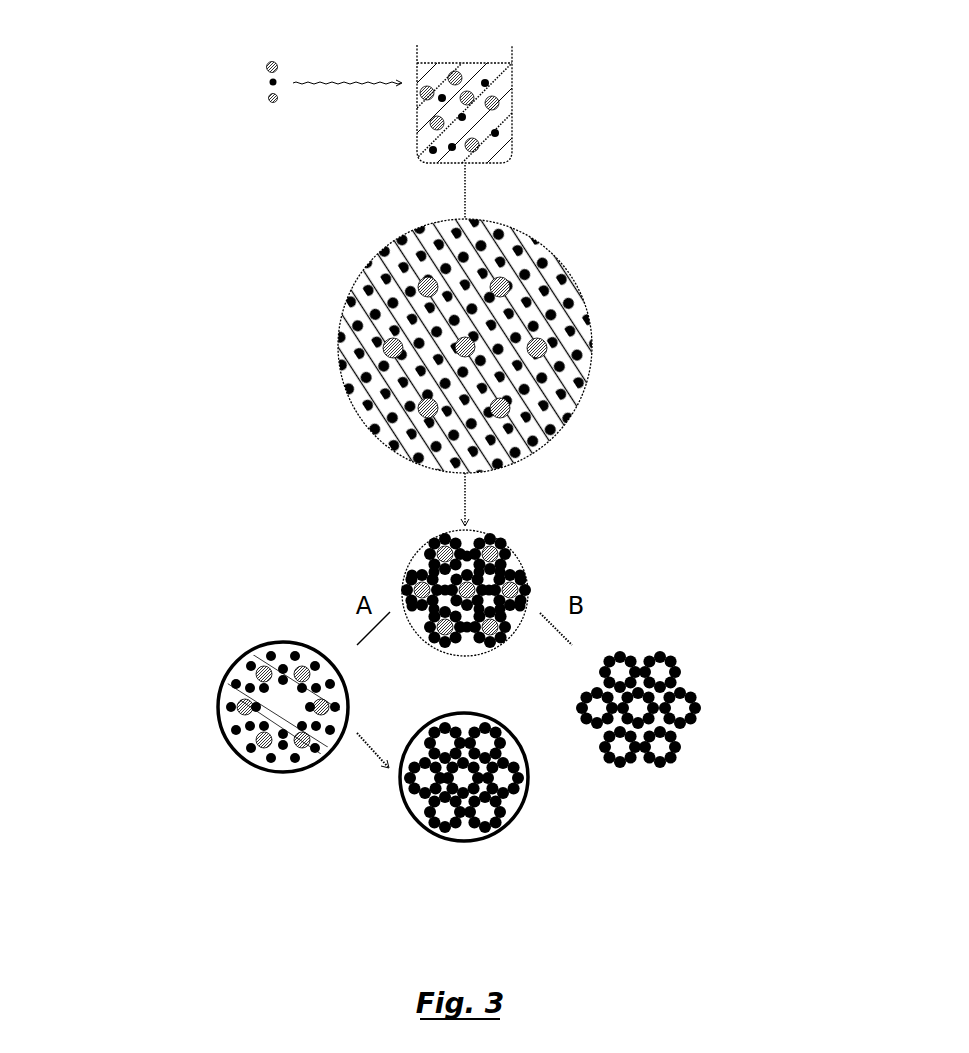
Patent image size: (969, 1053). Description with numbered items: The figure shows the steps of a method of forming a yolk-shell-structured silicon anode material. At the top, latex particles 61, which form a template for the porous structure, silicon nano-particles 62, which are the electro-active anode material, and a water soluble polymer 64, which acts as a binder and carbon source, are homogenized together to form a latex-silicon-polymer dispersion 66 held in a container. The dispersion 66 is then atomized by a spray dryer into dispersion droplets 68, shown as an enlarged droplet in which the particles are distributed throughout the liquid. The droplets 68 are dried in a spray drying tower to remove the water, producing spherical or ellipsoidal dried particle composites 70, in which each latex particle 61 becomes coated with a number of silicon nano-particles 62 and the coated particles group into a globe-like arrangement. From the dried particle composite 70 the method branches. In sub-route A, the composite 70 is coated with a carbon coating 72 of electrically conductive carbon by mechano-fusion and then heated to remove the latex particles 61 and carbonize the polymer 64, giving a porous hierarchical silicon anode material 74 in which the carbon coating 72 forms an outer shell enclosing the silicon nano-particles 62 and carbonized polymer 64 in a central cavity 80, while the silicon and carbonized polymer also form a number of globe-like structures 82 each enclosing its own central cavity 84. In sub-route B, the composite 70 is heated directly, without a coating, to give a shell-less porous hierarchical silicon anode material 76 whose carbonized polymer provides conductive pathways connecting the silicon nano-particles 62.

The latex particles 61 is at (267, 65).
The silicon nano-particles 62 is at (270, 82).
The water soluble polymer 64 is at (275, 100).
The latex-silicon-polymer dispersion 66 is at (440, 137).
The dispersion droplets 68 is at (553, 292).
The dried particle composites 70 is at (405, 562).
The carbon coating 72 is at (220, 717).
The porous hierarchical silicon anode material 74 is at (418, 823).
The shell-less porous hierarchical silicon anode material 76 is at (698, 708).
The central cavity 80 is at (415, 807).
The globe-like structure 82 is at (490, 825).
The central cavity 84 is at (500, 780).